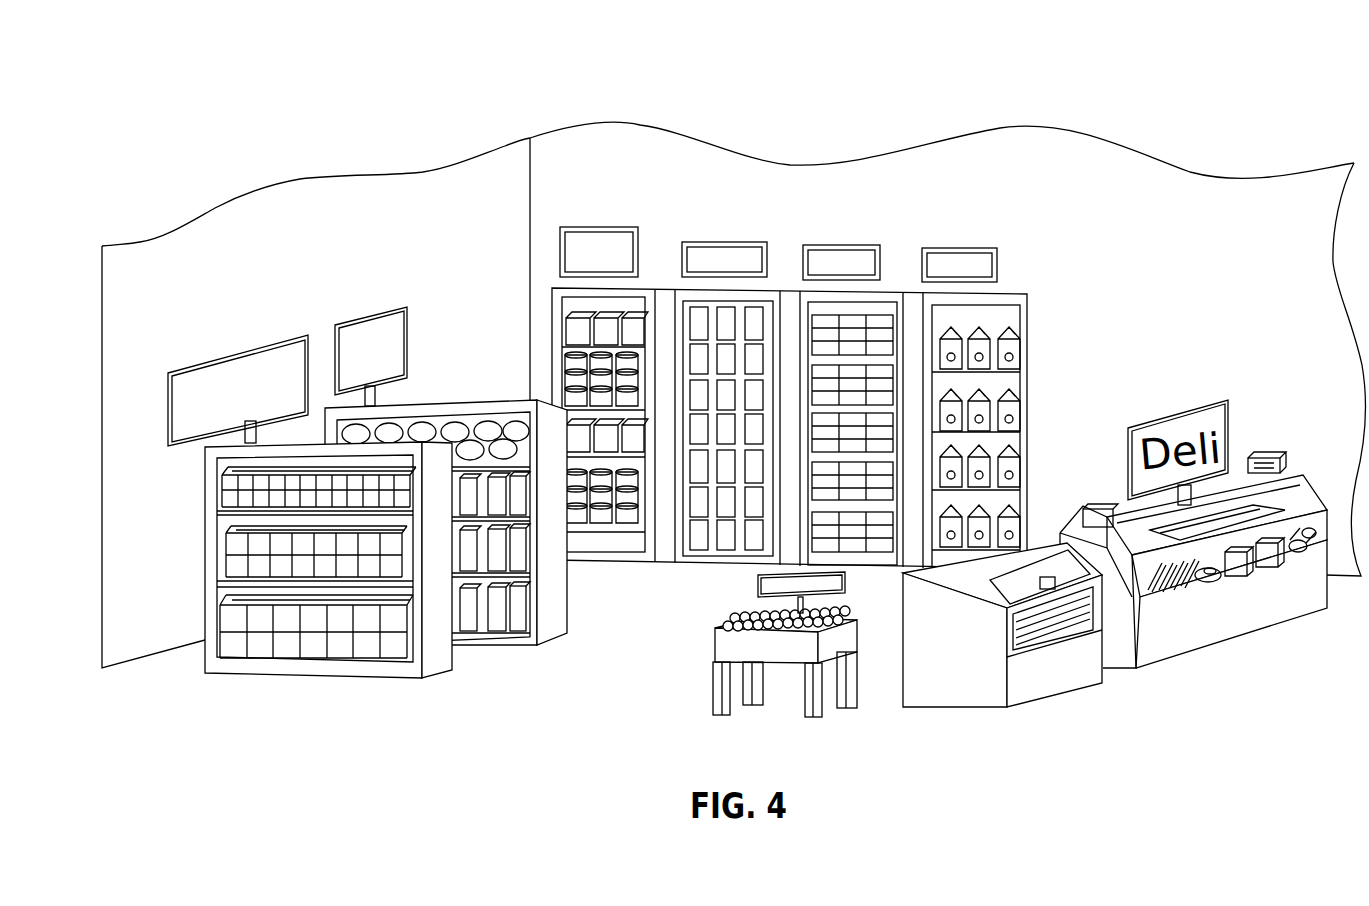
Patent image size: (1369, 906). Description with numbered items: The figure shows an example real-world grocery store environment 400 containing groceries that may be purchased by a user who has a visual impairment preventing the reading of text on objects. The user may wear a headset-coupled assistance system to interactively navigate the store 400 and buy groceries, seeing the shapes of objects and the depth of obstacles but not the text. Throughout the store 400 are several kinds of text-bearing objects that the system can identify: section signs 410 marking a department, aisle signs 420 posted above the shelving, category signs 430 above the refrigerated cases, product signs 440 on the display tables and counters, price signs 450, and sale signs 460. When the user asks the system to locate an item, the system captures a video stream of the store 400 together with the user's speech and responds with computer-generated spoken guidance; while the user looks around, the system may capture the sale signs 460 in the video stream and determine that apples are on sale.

The grocery store environment 400 is at (760, 118).
The section signs 410 is at (1189, 414).
The aisle signs 420 is at (265, 353).
The category signs 430 is at (528, 224).
The product signs 440 is at (1290, 613).
The price signs 450 is at (1280, 455).
The sale signs 460 is at (757, 578).